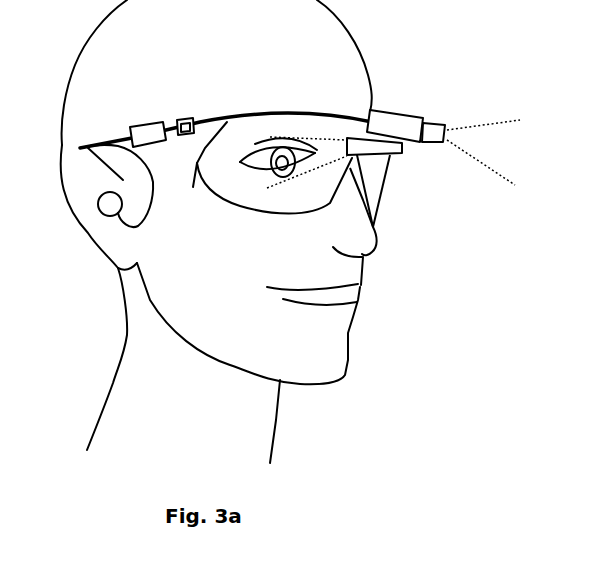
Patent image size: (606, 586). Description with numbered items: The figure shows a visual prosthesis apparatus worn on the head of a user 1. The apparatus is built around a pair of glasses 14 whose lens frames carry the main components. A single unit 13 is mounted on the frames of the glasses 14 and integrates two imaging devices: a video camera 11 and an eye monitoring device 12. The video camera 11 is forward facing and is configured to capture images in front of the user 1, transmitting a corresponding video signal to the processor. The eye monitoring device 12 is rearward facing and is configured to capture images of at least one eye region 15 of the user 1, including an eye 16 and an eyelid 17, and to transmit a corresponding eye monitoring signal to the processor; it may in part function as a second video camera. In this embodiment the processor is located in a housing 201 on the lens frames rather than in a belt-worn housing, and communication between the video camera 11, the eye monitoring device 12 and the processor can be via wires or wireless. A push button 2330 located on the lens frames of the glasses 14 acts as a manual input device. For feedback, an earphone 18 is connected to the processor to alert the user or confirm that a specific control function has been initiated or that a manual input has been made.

The user 1 is at (101, 75).
The push button 2330 is at (177, 118).
The housing 201 is at (155, 130).
The pair of glasses 14 is at (205, 117).
The single unit 13 is at (387, 110).
The video camera 11 is at (445, 122).
The eye monitoring device 12 is at (402, 155).
The eye region 15 is at (250, 172).
The eye 16 is at (268, 168).
The eyelid 17 is at (255, 155).
The earphone 18 is at (100, 213).